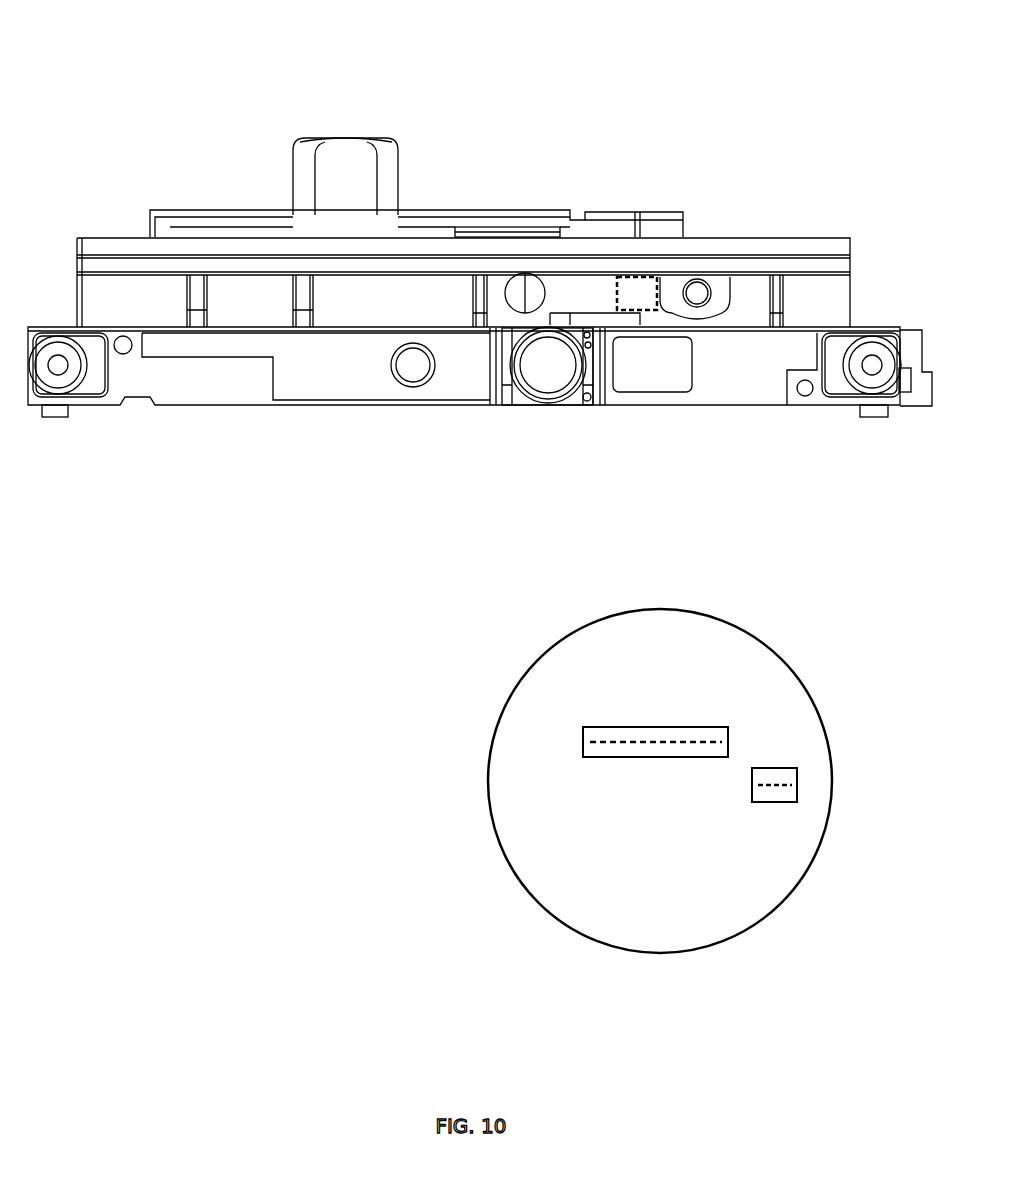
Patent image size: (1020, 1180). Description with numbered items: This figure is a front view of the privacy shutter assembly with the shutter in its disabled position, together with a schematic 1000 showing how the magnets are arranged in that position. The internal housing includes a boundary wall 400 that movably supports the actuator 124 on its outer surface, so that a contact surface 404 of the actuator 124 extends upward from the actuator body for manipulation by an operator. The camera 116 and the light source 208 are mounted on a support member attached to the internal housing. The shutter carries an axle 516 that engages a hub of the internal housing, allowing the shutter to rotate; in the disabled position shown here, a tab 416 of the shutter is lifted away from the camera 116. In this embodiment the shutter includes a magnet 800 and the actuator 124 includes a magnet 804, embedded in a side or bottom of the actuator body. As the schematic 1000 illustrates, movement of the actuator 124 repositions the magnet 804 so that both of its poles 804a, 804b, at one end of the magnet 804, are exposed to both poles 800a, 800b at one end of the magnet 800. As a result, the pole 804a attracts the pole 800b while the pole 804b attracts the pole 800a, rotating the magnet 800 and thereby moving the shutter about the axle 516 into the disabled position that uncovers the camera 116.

The camera 116 is at (548, 383).
The actuator 124 is at (206, 200).
The light source 208 is at (404, 374).
The boundary wall 400 is at (733, 265).
The contact surface 404 is at (327, 138).
The tab 416 is at (520, 302).
The axle 516 is at (697, 303).
The magnet 800 is at (637, 313).
The first pole 800a is at (787, 805).
The second pole 800b is at (797, 777).
The magnet 804 is at (500, 227).
The first pole 804a is at (675, 727).
The second pole 804b is at (632, 757).
The schematic 1000 is at (488, 745).